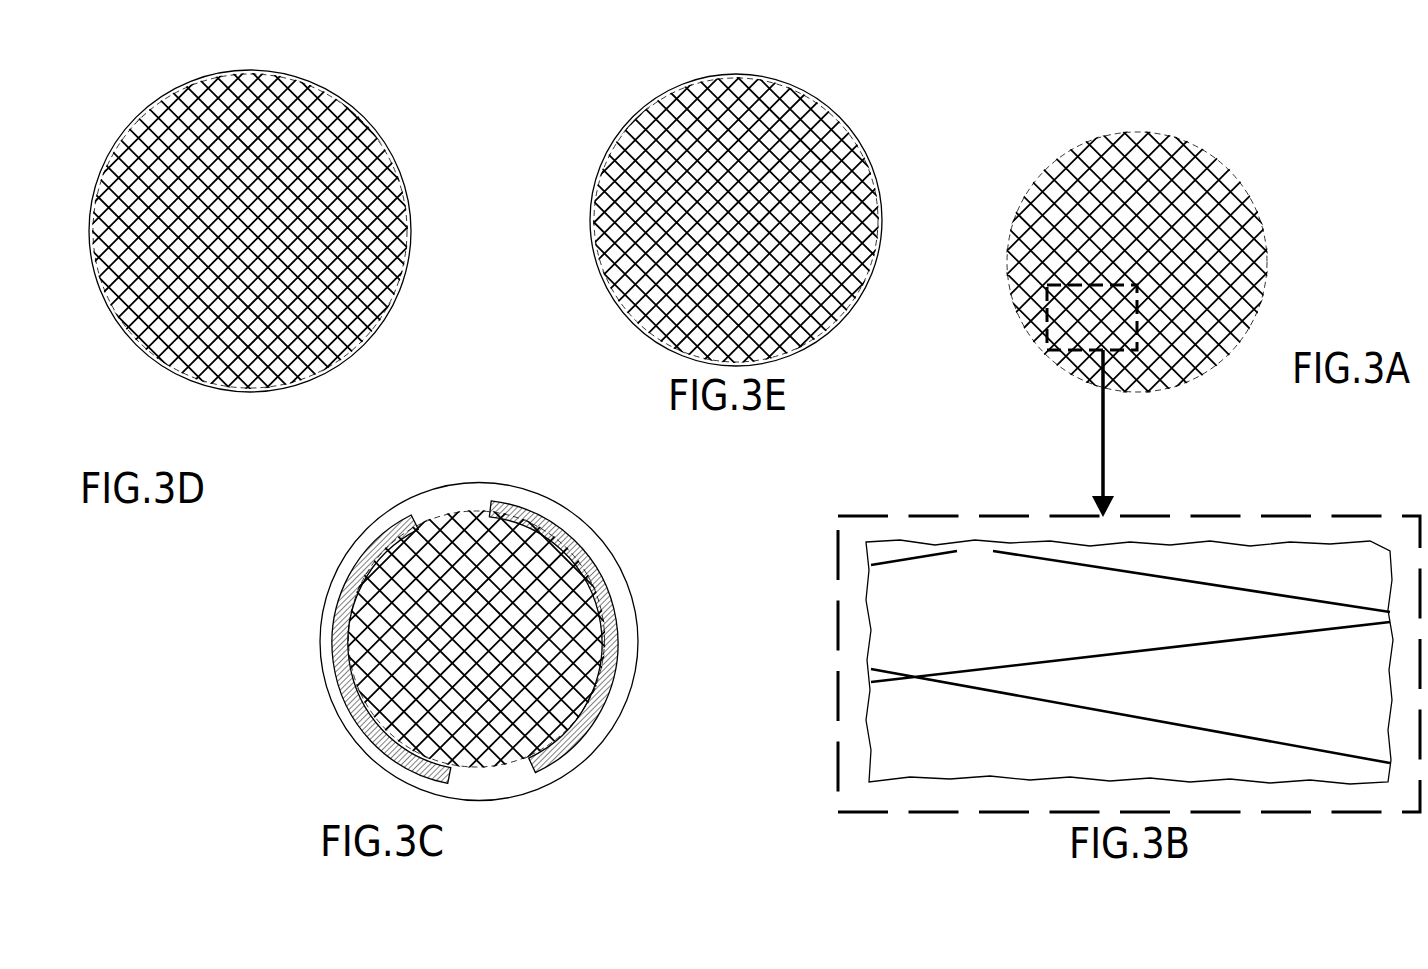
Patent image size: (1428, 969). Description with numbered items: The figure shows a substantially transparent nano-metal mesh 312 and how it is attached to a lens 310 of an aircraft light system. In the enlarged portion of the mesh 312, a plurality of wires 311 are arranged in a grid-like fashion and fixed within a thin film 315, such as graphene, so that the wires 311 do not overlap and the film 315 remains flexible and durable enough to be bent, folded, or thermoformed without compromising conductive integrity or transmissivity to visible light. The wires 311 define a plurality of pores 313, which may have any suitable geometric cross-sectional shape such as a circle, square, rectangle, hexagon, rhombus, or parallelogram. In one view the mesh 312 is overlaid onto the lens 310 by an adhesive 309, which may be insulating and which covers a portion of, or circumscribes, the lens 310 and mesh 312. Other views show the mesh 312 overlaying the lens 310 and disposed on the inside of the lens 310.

In FIG. 3C, the adhesive 309 is at (412, 501).
In FIG. 3D, the lens 310 is at (162, 364).
In FIG. 3E, the lens 310 is at (610, 147).
In FIG. 3C, the lens 310 is at (360, 533).
In FIG. 3B, the wires 311 is at (961, 622).
In FIG. 3D, the mesh 312 is at (355, 313).
In FIG. 3E, the mesh 312 is at (810, 145).
In FIG. 3A, the mesh 312 is at (1285, 169).
In FIG. 3C, the mesh 312 is at (483, 767).
In FIG. 3B, the pores 313 is at (1148, 578).
In FIG. 3B, the thin film 315 is at (1330, 546).